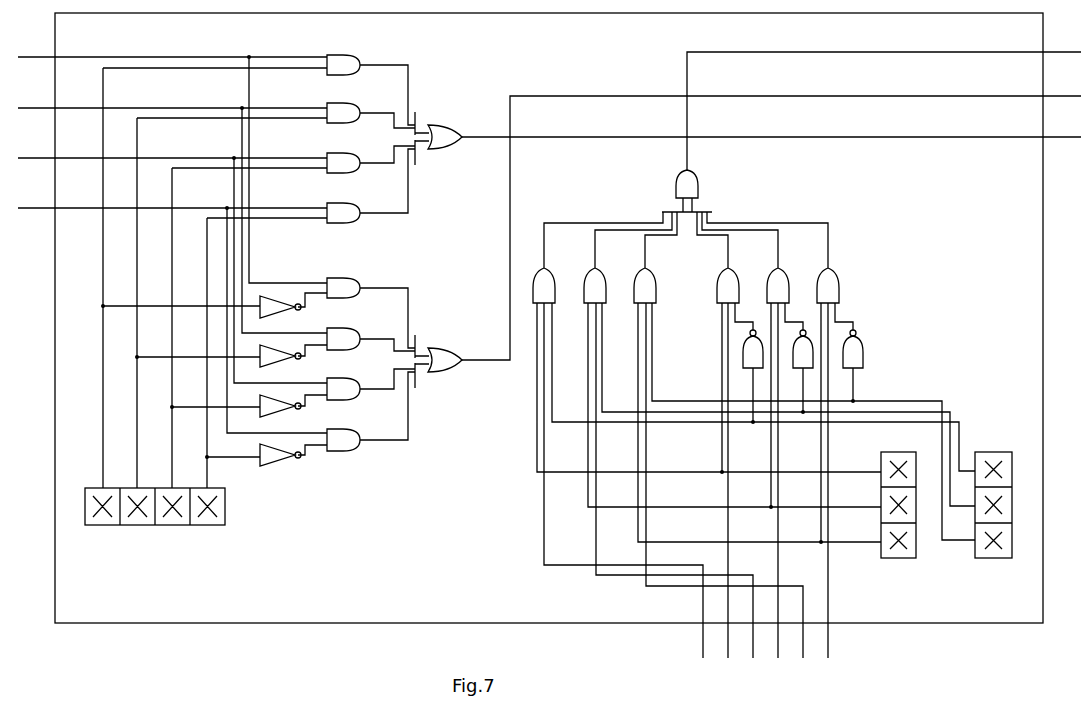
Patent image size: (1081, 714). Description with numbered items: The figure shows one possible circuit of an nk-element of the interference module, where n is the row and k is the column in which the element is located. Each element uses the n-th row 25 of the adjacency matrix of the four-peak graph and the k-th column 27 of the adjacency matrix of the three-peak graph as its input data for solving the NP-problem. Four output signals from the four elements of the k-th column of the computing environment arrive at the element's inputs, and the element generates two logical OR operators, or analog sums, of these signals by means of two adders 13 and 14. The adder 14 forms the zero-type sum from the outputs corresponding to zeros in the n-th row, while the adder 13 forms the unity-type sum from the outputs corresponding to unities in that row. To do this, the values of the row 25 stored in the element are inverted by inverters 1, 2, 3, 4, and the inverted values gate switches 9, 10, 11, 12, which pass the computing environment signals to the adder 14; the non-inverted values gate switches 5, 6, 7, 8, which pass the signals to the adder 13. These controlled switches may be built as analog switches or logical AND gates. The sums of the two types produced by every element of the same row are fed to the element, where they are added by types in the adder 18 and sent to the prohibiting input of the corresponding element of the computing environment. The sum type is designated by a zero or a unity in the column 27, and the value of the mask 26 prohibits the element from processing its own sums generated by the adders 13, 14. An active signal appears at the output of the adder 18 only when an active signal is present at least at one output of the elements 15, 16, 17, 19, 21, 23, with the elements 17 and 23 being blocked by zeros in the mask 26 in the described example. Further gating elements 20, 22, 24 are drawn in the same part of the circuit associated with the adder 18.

The inverter 1 is at (172, 178).
The inverter 2 is at (172, 227).
The inverter 3 is at (172, 277).
The inverter 4 is at (172, 327).
The switch 5 is at (515, 349).
The switch 6 is at (527, 373).
The switch 7 is at (540, 398).
The switch 8 is at (552, 403).
The switch 9 is at (565, 461).
The switch 10 is at (577, 480).
The switch 11 is at (704, 258).
The switch 12 is at (704, 263).
The adder 13 is at (748, 101).
The adder 14 is at (450, 361).
The element 15 is at (754, 342).
The element 16 is at (779, 359).
The element 17 is at (804, 377).
The adder 18 is at (687, 180).
The element 19 is at (725, 342).
The NOR gate 20 is at (751, 363).
The element 21 is at (752, 359).
The NOR gate 22 is at (801, 358).
The element 23 is at (780, 377).
The NOR gate 24 is at (851, 352).
The n-th row of the adjacency matrix 25 is at (206, 296).
The mask 26 is at (909, 496).
The k-th column of the adjacency matrix 27 is at (1004, 496).